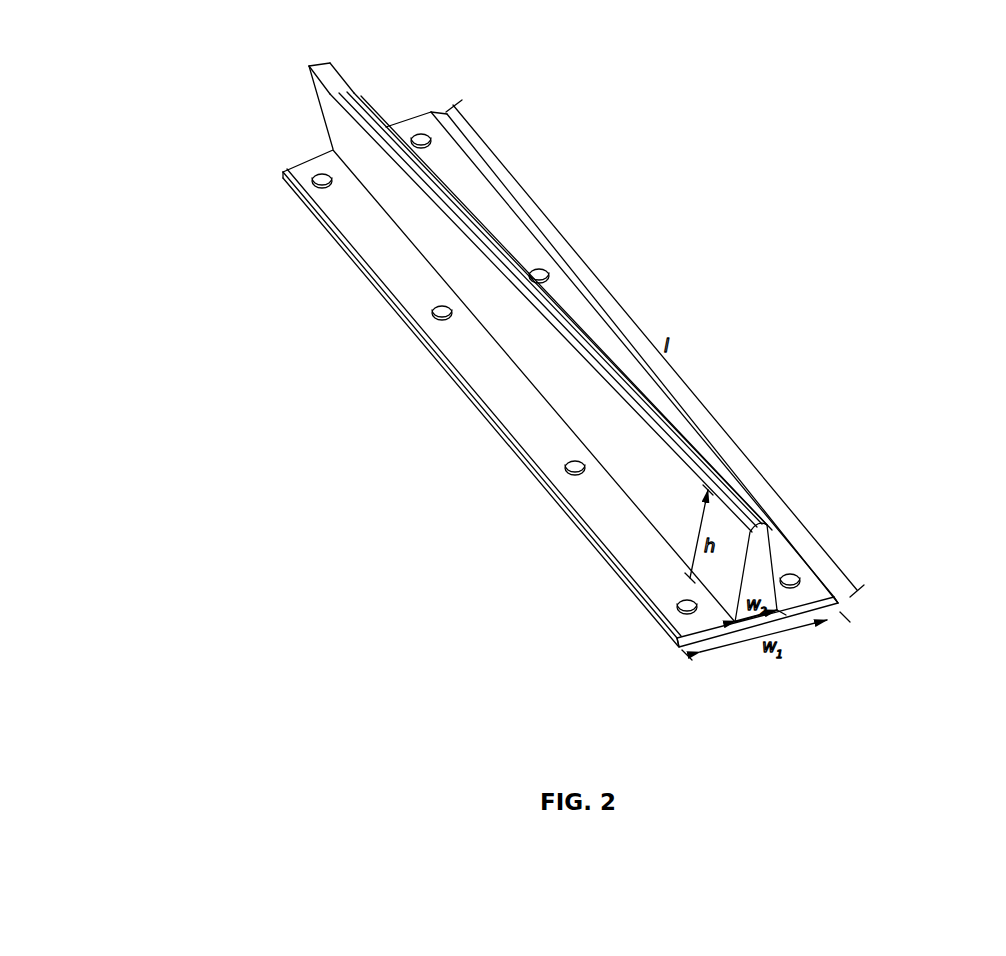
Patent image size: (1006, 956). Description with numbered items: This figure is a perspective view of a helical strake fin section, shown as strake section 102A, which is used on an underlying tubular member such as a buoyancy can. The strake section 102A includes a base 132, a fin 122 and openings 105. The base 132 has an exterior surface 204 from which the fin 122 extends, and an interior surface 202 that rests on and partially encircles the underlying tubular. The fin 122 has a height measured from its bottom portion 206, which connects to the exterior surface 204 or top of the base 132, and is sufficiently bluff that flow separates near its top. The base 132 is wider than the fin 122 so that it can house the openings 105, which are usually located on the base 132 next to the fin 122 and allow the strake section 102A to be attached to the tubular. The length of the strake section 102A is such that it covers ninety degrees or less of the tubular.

The strake section 102A is at (563, 355).
The openings 105 is at (672, 608).
The fin 122 is at (358, 84).
The base 132 is at (627, 592).
The interior surface 202 is at (712, 640).
The exterior surface 204 is at (684, 626).
The bottom portion 206 is at (784, 612).